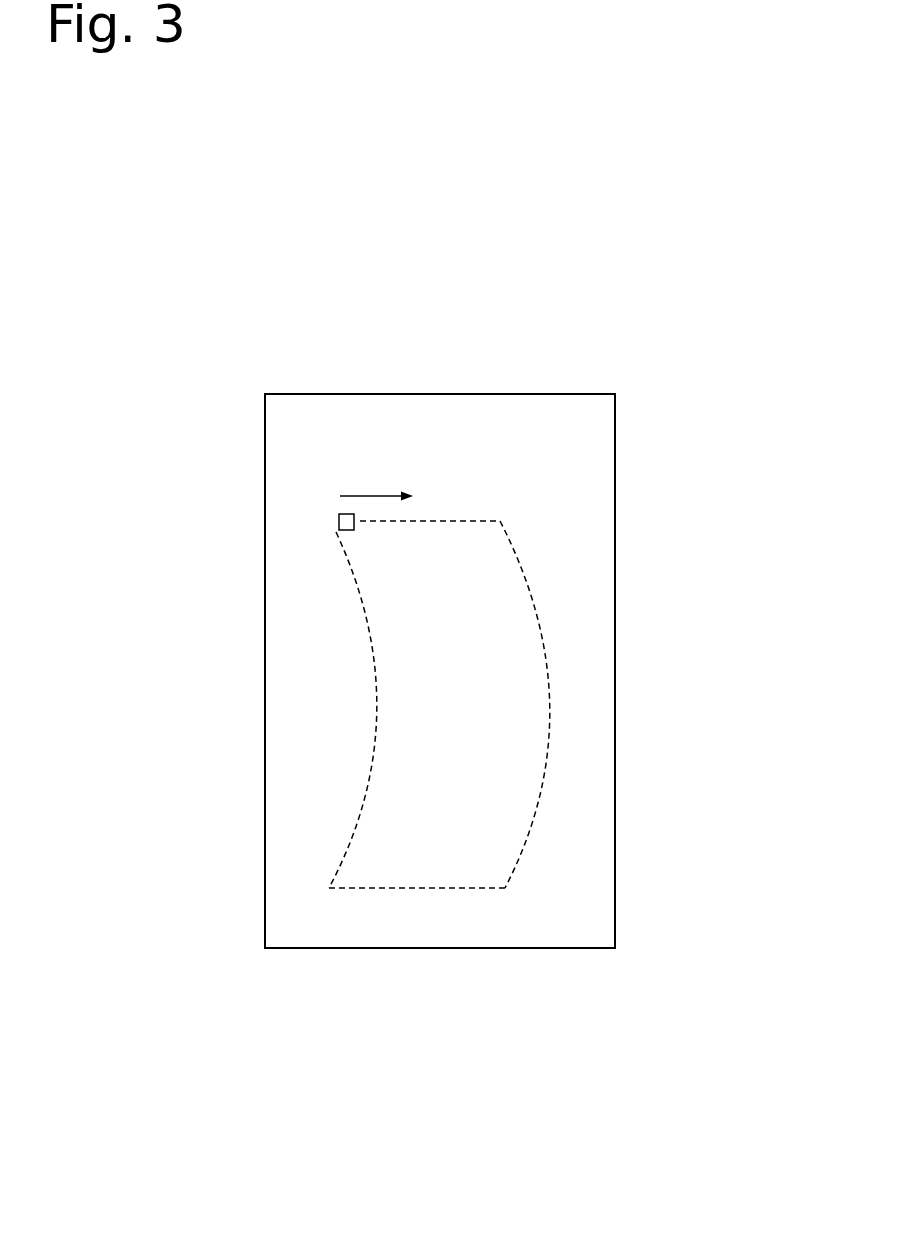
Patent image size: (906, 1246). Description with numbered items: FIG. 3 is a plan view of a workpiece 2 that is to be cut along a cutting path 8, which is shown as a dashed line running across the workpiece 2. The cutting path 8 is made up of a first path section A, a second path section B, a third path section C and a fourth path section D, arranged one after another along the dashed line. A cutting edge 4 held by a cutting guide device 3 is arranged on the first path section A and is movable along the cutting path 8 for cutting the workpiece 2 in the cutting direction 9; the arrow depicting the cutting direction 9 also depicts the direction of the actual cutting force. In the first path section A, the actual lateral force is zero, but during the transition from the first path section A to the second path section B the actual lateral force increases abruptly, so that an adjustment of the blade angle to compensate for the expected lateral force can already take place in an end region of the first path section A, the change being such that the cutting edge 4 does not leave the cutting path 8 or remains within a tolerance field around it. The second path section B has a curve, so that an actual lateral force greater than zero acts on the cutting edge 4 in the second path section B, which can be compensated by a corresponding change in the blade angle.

The workpiece 2 is at (575, 440).
The cutting guide device 3 is at (337, 522).
The cutting edge 4 is at (277, 454).
The cutting direction 9 is at (373, 496).
The cutting path 8 is at (255, 710).
The first path section A is at (444, 521).
The second path section B is at (552, 710).
The third path section C is at (405, 888).
The fourth path section D is at (375, 716).